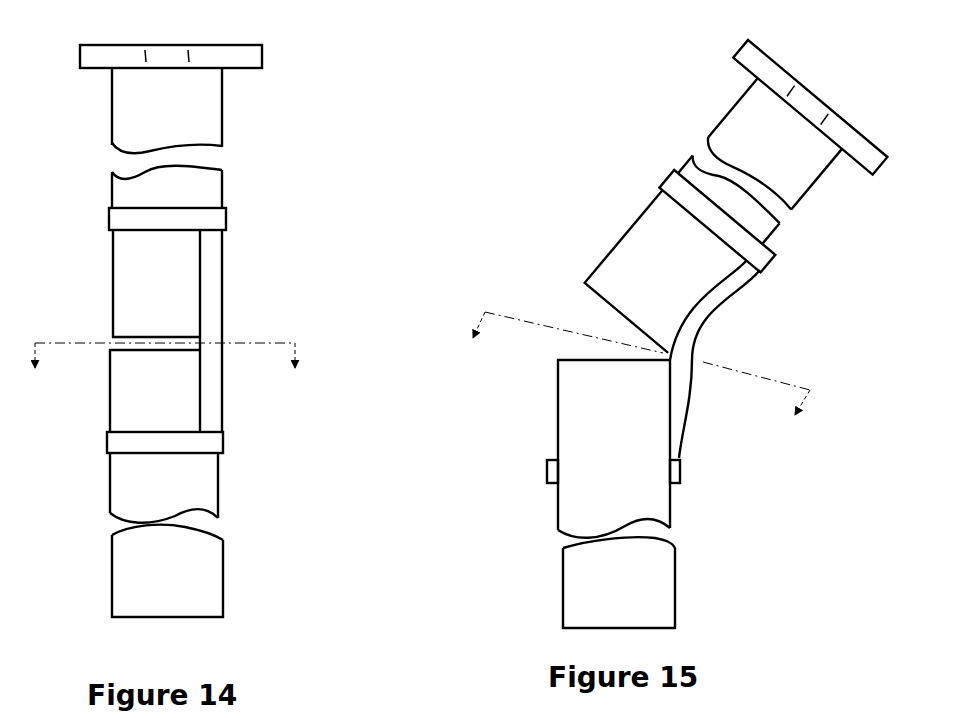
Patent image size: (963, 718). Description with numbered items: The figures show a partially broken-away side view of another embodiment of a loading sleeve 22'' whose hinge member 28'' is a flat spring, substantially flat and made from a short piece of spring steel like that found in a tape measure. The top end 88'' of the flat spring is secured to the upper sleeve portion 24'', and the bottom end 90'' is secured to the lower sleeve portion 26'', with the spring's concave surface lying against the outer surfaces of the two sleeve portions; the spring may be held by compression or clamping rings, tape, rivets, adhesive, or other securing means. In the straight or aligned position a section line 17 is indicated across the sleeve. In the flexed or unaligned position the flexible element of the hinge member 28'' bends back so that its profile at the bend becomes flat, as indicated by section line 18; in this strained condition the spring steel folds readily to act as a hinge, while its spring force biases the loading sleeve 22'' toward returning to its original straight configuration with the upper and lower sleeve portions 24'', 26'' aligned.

In FIG. 14, the loading sleeve 22'' is at (237, 326).
In FIG. 15, the loading sleeve 22'' is at (669, 331).
In FIG. 14, the upper sleeve portion 24'' is at (245, 138).
In FIG. 15, the upper sleeve portion 24'' is at (705, 161).
In FIG. 14, the lower sleeve portion 26'' is at (244, 535).
In FIG. 15, the lower sleeve portion 26'' is at (693, 544).
In FIG. 14, the hinge member 28'' is at (246, 331).
In FIG. 15, the hinge member 28'' is at (710, 325).
In FIG. 14, the top end of the flat spring 88'' is at (281, 213).
In FIG. 15, the top end of the flat spring 88'' is at (750, 243).
In FIG. 14, the bottom end of the flat spring 90'' is at (271, 449).
In FIG. 15, the bottom end of the flat spring 90'' is at (666, 484).
In FIG. 14, the section line 17- 17 is at (165, 373).
In FIG. 15, the section line 18- 18 is at (631, 379).